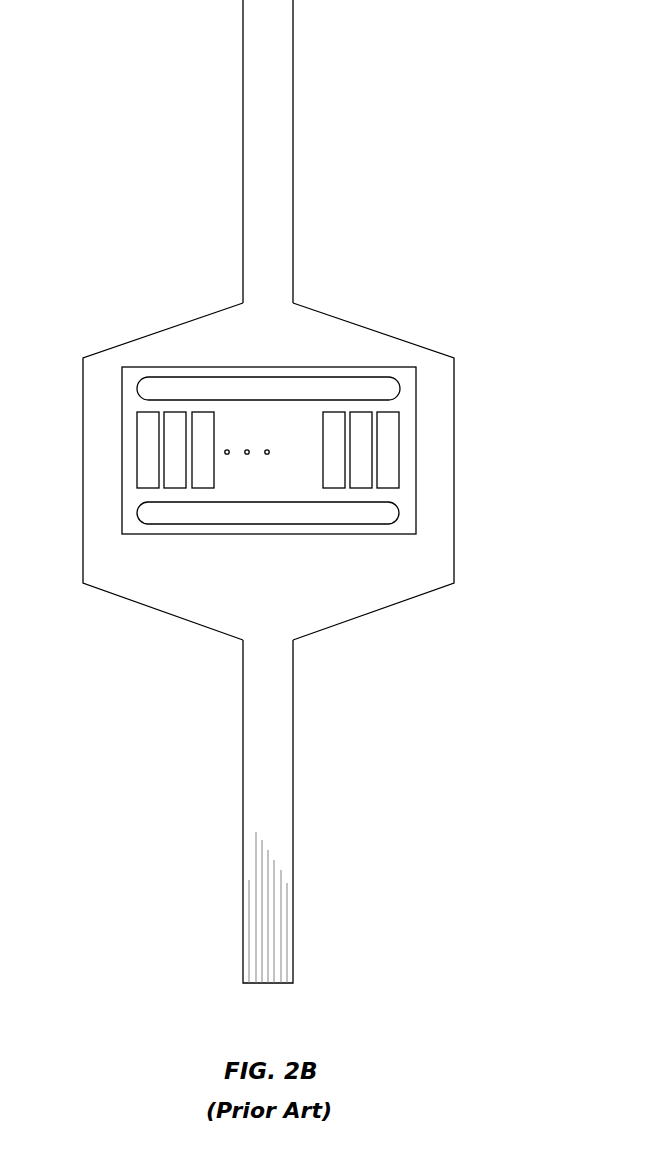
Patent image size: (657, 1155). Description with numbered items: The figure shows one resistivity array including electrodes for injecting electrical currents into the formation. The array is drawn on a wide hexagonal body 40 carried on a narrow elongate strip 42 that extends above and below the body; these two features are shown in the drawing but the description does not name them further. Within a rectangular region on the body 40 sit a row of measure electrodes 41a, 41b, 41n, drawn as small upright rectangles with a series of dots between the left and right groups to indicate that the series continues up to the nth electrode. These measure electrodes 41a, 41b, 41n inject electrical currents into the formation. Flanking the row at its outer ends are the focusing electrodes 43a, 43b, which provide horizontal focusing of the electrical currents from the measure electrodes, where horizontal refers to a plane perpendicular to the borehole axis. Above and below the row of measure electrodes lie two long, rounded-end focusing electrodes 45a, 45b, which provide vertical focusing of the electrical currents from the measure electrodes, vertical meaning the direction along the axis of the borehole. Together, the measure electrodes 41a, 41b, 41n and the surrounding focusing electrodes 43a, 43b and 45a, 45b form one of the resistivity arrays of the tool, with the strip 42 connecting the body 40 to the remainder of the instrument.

The sensor body / hexagonal substrate 40 is at (328, 312).
The strip / lead portion 42 is at (292, 180).
The measure electrode 41a is at (177, 432).
The measure electrode 41b is at (202, 472).
The measure electrode 41n is at (359, 432).
The focusing electrode 43a is at (147, 443).
The focusing electrode 43b is at (393, 442).
The focusing electrode 45a is at (217, 366).
The focusing electrode 45b is at (385, 513).